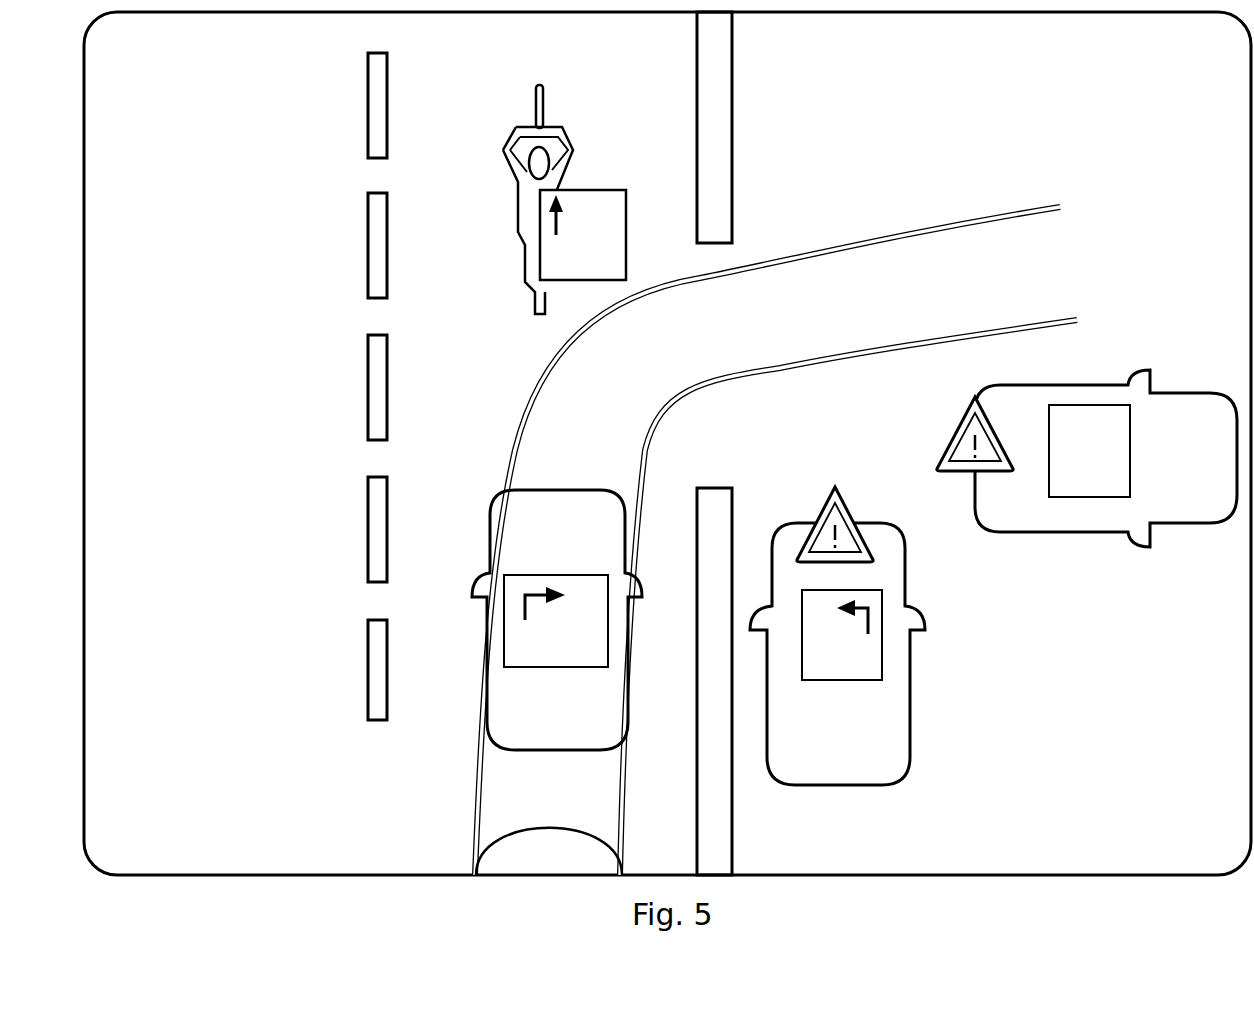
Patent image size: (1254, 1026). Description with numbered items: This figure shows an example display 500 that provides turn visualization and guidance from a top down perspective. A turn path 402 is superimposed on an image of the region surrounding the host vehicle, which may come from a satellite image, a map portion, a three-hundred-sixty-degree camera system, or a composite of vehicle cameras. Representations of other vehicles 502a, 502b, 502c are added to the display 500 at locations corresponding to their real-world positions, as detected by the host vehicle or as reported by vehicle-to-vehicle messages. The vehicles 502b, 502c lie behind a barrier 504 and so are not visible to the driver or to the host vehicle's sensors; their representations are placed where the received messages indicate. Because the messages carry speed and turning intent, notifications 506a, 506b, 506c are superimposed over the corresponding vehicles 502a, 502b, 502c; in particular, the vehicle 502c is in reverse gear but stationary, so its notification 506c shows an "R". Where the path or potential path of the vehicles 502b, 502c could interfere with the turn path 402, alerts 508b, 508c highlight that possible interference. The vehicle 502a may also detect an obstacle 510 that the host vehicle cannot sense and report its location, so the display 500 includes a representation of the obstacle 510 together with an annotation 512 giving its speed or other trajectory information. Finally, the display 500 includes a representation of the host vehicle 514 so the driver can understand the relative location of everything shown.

The turn path 402 is at (650, 447).
The display 500 is at (202, 804).
The vehicle 502a is at (540, 750).
The vehicle 502b is at (855, 785).
The vehicle 502c is at (1040, 532).
The barrier 504 is at (733, 787).
The notification 506a is at (523, 667).
The notification 506b is at (830, 680).
The notification 506c is at (1130, 440).
The alert 508b is at (824, 497).
The alert 508c is at (945, 452).
The obstacle 510 is at (522, 233).
The annotation 512 is at (604, 190).
The vehicle 514 is at (567, 862).